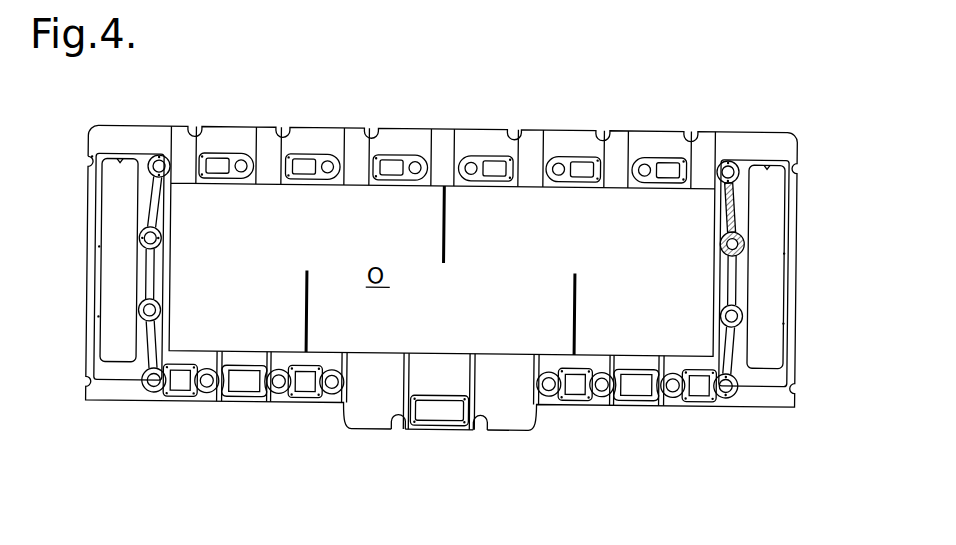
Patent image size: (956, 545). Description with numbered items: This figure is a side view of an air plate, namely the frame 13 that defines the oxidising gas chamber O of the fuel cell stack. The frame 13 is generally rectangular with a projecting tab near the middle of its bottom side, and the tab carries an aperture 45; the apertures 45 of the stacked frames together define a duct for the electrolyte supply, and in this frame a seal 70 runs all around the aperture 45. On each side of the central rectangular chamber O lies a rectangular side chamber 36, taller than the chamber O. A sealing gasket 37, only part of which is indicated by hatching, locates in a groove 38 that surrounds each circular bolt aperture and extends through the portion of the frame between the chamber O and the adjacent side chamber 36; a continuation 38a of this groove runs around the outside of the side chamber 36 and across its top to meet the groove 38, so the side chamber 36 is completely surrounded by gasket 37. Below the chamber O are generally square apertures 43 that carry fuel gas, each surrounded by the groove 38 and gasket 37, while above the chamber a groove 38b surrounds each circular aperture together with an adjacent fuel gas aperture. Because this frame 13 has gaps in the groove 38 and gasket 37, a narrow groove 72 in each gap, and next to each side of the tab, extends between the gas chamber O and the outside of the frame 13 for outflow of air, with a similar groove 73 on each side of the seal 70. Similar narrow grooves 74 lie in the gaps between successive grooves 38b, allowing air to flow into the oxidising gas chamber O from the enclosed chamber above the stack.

The frame 13 is at (485, 127).
The narrow grooves 74 is at (545, 150).
The groove 38b is at (393, 161).
The sealing gasket 37 is at (734, 208).
The rectangular side chamber 36 is at (762, 261).
The continuation of the groove 38a is at (786, 303).
The groove 38 is at (728, 355).
The generally square apertures 43 is at (184, 385).
The narrow groove 72 is at (215, 403).
The groove 73 is at (401, 418).
The seal 70 is at (441, 424).
The aperture 45 is at (461, 412).